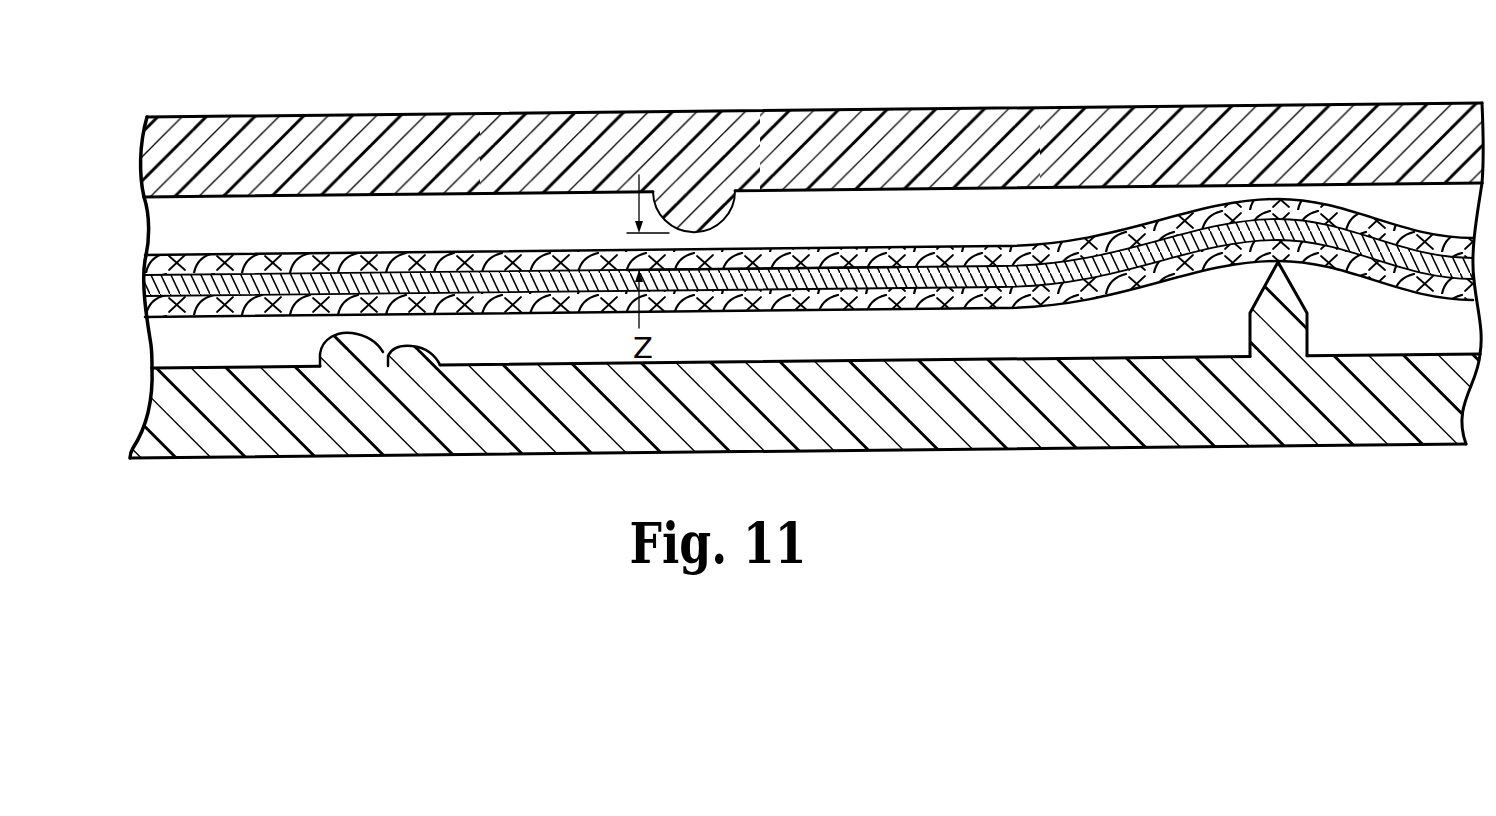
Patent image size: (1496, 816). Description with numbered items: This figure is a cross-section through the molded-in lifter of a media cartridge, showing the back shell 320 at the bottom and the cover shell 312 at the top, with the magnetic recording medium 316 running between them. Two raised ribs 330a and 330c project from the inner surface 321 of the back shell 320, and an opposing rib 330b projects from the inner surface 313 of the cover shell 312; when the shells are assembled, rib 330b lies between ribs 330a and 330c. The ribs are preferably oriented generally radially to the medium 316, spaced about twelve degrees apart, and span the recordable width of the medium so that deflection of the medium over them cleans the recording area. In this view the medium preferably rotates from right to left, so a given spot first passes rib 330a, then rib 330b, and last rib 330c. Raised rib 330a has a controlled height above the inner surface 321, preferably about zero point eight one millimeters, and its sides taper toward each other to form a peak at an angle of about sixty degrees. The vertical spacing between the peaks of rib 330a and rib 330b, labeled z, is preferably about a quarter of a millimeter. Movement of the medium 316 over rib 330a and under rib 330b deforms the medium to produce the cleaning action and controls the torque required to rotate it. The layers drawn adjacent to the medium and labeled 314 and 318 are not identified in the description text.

The cover shell 312 is at (1007, 108).
The inner surface of cover shell 313 is at (1165, 122).
The upper fabric layer 314 is at (446, 262).
The magnetic recording medium 316 is at (338, 282).
The lower fabric layer 318 is at (251, 292).
The back shell 320 is at (883, 449).
The inner surface of back shell 321 is at (975, 362).
The raised rib 330a is at (1281, 313).
The opposing rib 330b is at (736, 200).
The raised rib 330c is at (447, 366).